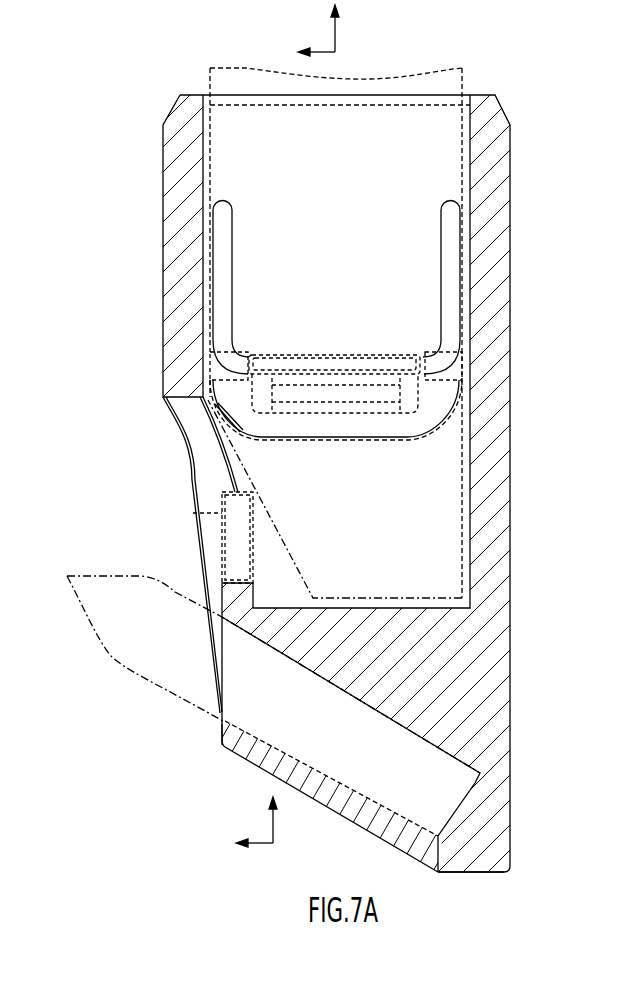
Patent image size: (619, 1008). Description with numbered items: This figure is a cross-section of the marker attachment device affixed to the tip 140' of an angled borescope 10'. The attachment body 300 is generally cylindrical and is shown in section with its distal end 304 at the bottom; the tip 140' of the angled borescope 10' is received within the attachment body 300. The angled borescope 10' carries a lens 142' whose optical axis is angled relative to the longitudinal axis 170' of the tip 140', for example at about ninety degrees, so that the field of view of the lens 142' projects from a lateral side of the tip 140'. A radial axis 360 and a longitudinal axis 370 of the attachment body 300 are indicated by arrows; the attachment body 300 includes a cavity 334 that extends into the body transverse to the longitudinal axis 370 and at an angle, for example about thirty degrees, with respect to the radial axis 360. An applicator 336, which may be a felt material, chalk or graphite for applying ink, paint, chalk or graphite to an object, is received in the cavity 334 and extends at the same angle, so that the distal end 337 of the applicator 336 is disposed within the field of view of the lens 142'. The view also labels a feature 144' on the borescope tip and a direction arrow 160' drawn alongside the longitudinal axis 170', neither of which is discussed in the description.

The angled borescope 10' is at (342, 369).
The tip 140' is at (364, 313).
The lens 142' is at (190, 555).
The contact 144' is at (383, 321).
The first direction 160' is at (301, 38).
The longitudinal axis 170' is at (358, 30).
The attachment body 300 is at (503, 690).
The distal end 304 is at (495, 873).
The cavity 334 is at (412, 824).
The applicator 336 is at (108, 576).
The distal end of the applicator 337 is at (67, 576).
The radial axis 360 is at (262, 841).
The longitudinal axis 370 is at (278, 828).